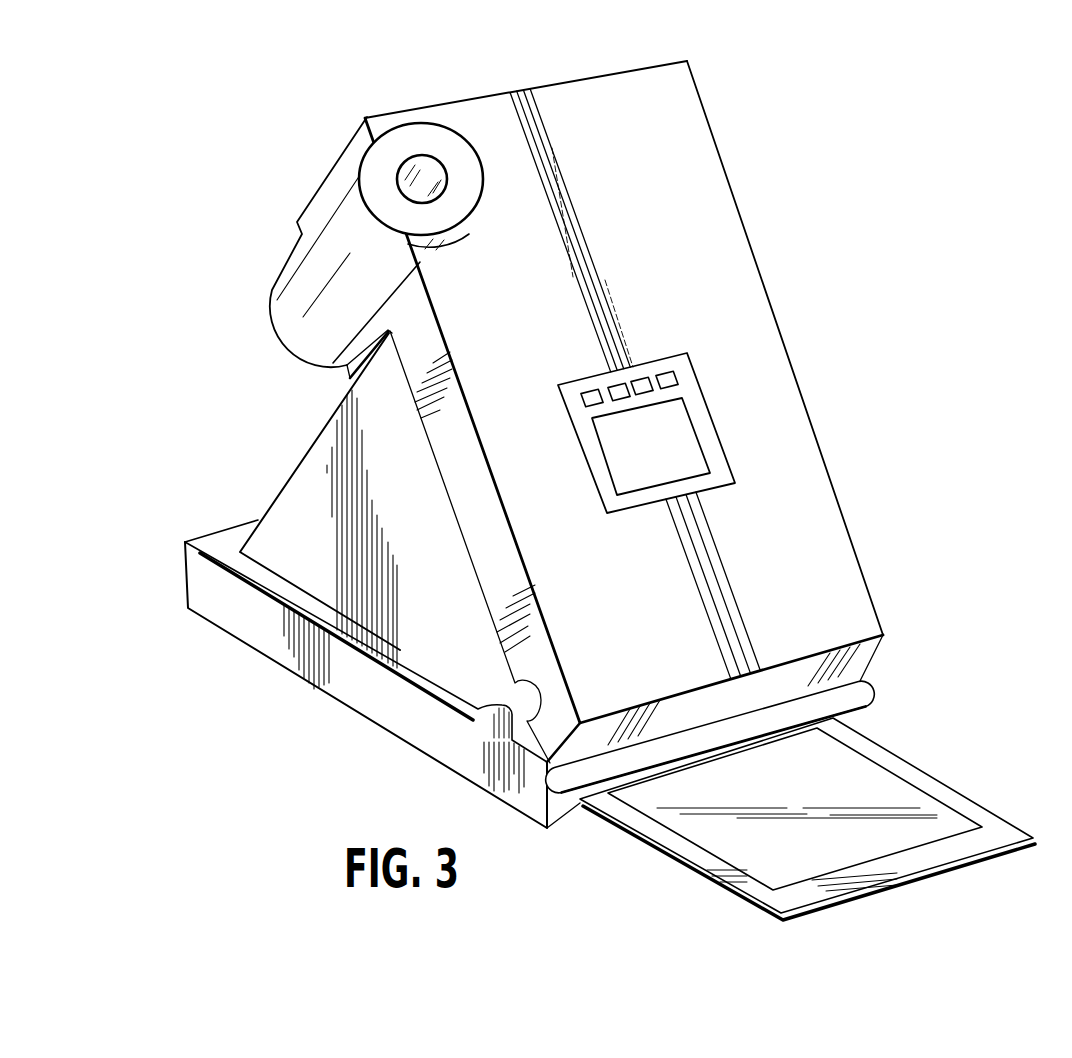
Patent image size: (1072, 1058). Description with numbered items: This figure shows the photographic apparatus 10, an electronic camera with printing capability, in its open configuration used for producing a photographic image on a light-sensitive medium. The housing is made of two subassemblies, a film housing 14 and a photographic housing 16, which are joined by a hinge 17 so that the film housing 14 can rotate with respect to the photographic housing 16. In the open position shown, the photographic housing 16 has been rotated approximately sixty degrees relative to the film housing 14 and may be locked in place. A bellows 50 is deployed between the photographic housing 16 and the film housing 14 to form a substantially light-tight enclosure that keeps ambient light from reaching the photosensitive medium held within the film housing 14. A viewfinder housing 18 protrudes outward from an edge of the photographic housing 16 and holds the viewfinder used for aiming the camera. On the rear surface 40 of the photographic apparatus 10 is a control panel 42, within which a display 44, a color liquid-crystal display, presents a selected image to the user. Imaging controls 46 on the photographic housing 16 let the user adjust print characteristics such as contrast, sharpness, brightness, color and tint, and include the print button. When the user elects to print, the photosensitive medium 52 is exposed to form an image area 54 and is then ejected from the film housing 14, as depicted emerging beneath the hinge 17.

The photographic apparatus 10 is at (815, 422).
The film housing 14 is at (403, 717).
The photographic housing 16 is at (688, 62).
The hinge 17 is at (852, 690).
The viewfinder housing 18 is at (295, 297).
The rear surface 40 is at (484, 122).
The control panel 42 is at (650, 414).
The display 44 is at (682, 450).
The imaging controls 46 is at (642, 378).
The bellows 50 is at (307, 498).
The photosensitive medium 52 is at (807, 819).
The image area 54 is at (870, 792).